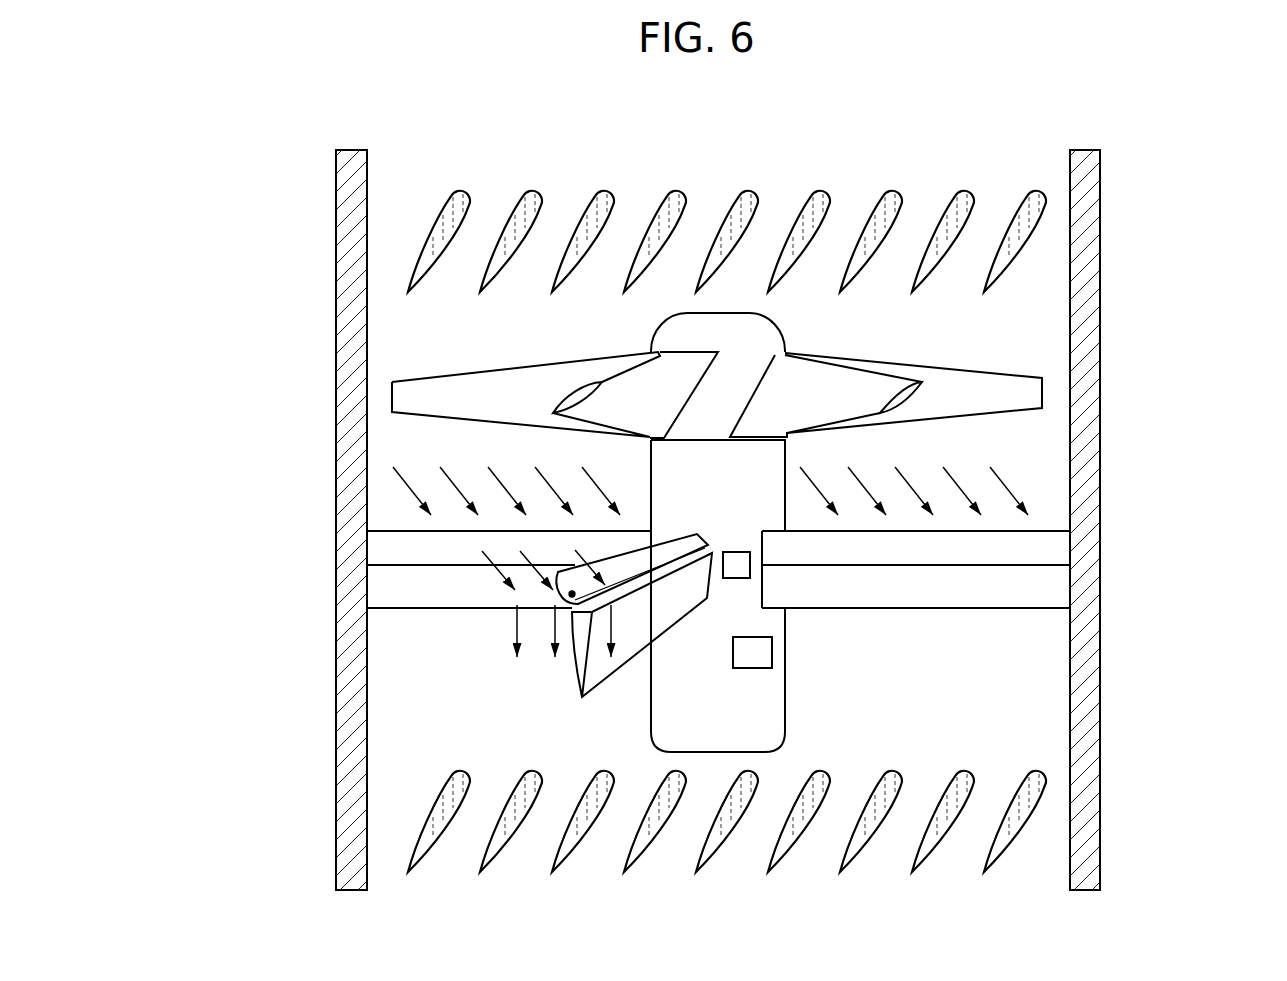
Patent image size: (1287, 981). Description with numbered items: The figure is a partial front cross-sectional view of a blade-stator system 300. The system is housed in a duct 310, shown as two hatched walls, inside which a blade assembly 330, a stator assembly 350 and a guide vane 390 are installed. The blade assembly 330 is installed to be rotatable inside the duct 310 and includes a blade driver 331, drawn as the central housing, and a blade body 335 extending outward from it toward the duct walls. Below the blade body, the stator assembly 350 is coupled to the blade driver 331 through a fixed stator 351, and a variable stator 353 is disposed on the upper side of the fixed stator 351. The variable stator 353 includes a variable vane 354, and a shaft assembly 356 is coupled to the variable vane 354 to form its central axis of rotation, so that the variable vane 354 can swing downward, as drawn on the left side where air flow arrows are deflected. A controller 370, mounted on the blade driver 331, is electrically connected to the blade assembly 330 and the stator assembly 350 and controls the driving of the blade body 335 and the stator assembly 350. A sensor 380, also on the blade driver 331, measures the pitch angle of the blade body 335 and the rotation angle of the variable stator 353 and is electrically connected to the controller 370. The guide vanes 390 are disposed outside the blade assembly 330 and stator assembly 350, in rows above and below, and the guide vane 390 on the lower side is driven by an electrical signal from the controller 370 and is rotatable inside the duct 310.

The blade-stator system 300 is at (1208, 392).
The duct 310 is at (1092, 740).
The blade assembly 330 is at (803, 532).
The blade driver 331 is at (765, 487).
The blade body 335 is at (955, 378).
The stator assembly 350 is at (695, 614).
The fixed stator 351 is at (580, 660).
The variable stator 353 is at (694, 581).
The variable vane 354 is at (556, 584).
The shaft assembly 356 is at (568, 596).
The controller 370 is at (760, 656).
The sensor 380 is at (733, 575).
The guide vane 390 is at (1025, 213).